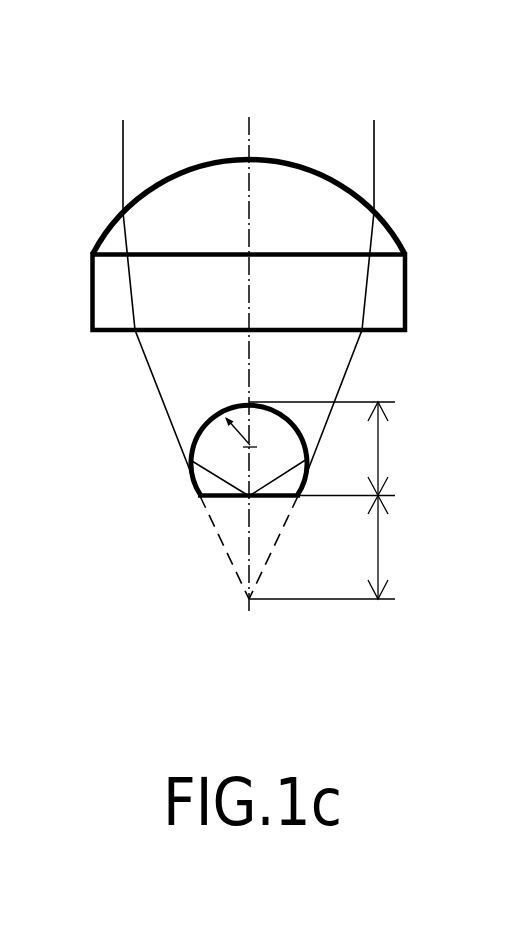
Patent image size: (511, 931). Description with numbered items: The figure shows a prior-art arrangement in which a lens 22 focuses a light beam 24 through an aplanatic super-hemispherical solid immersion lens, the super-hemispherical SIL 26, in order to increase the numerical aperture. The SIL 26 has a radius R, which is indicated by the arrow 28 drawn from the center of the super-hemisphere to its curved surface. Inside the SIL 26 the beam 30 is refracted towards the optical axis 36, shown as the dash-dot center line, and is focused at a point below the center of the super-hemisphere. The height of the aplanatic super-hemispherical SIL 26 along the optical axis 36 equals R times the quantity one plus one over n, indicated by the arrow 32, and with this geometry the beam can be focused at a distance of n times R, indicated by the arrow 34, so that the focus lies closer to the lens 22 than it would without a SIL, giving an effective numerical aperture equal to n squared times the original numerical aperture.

The lens 22 is at (249, 159).
The light beam 24 is at (200, 359).
The aplanatic super-hemispherical SIL 26 is at (209, 496).
The arrow 28 is at (197, 450).
The beam 30 is at (216, 538).
The arrow 32 is at (378, 426).
The arrow 34 is at (328, 548).
The optical axis 36 is at (280, 306).